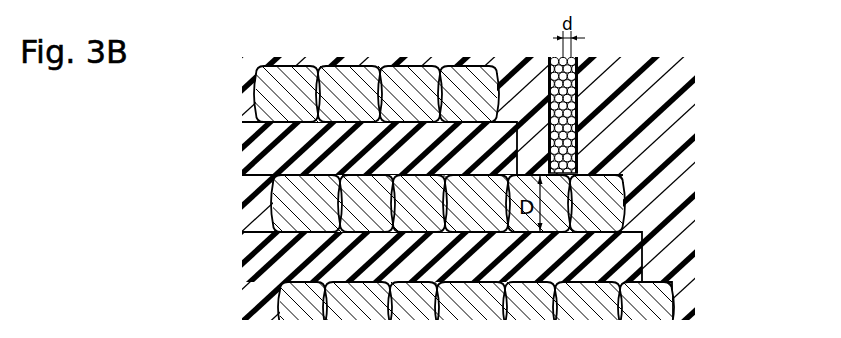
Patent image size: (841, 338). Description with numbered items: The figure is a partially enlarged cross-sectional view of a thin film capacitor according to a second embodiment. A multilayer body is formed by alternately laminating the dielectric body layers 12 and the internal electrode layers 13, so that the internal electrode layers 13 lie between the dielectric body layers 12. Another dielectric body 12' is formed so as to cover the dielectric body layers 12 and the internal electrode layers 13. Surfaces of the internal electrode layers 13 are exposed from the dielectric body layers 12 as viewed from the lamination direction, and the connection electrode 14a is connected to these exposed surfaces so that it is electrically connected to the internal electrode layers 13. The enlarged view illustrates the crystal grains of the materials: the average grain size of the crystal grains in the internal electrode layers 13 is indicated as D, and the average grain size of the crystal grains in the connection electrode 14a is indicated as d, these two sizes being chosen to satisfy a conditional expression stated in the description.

The dielectric body layer 12 is at (420, 190).
The dielectric body 12' is at (420, 190).
The internal electrode layer 13 is at (290, 100).
The connection electrode 14a is at (577, 94).